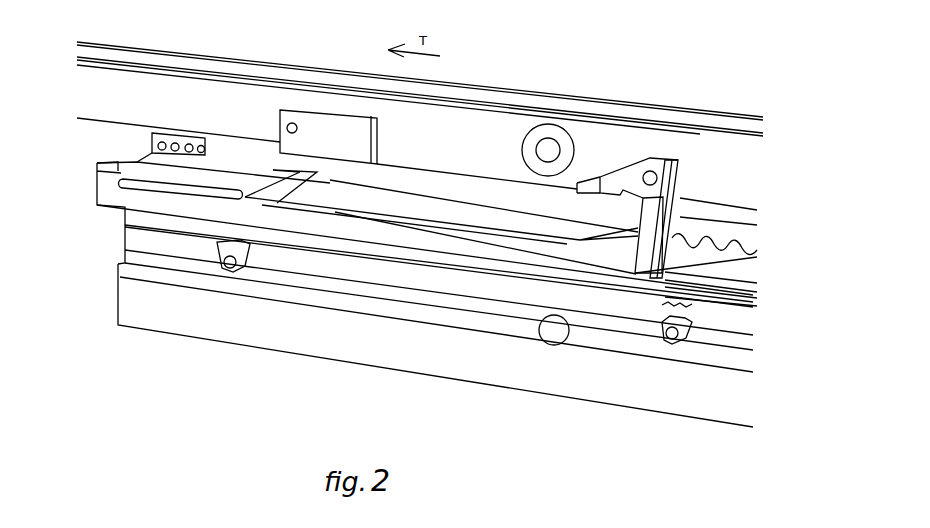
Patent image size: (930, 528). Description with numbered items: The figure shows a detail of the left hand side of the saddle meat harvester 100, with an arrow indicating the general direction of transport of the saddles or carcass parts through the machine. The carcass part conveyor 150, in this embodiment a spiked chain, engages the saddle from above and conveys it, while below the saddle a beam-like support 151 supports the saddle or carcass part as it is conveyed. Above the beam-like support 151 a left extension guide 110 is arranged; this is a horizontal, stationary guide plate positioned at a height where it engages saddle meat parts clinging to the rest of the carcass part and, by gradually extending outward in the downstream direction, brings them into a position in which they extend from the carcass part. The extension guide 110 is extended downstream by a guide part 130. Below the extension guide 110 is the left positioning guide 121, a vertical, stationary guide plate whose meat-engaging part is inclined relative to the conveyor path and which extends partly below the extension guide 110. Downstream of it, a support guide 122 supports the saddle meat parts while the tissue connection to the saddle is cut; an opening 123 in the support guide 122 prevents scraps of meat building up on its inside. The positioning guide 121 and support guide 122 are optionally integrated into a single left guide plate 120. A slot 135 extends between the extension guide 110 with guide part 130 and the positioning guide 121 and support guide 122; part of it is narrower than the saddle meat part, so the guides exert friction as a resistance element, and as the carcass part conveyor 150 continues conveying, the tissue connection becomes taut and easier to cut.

The saddle meat harvester 100 is at (554, 428).
The left extension guide 110 is at (475, 212).
The single left guide plate 120 is at (127, 200).
The left positioning guide 121 is at (353, 228).
The support guide 122 is at (97, 166).
The opening 123 is at (97, 197).
The guide part 130 is at (217, 173).
The slot 135 is at (245, 178).
The carcass part conveyor 150 is at (753, 258).
The beam-like support 151 is at (753, 292).